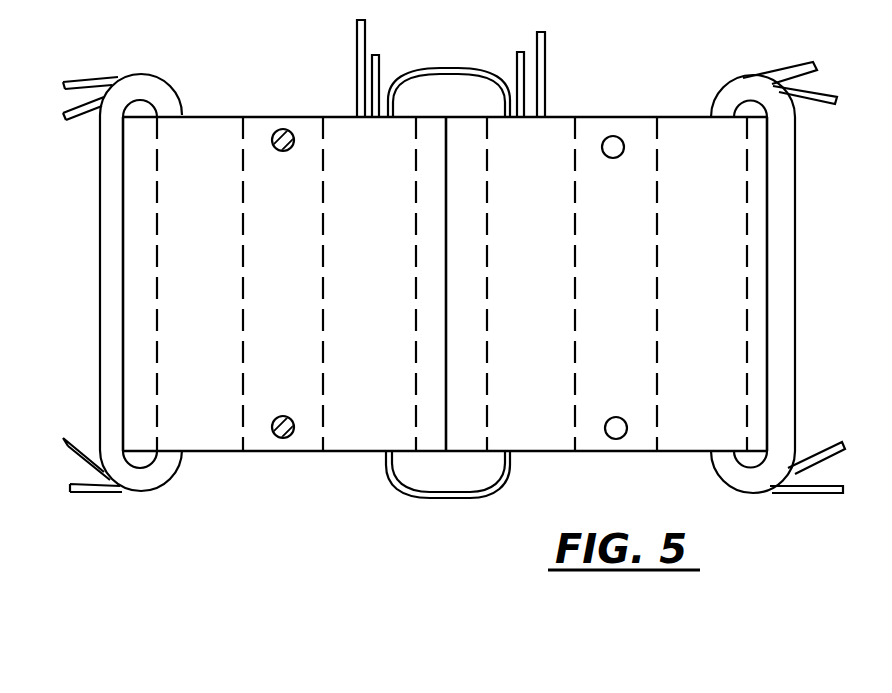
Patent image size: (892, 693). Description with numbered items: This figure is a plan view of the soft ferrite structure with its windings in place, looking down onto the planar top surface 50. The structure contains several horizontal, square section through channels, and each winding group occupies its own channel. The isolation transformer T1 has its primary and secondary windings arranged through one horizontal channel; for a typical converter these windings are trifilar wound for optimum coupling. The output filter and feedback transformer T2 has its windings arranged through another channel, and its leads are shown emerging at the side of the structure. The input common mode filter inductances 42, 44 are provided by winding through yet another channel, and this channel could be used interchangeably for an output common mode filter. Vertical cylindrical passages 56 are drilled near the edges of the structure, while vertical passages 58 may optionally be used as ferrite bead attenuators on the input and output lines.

The input common mode filter inductance 42 is at (76, 117).
The input common mode filter inductance 44 is at (112, 57).
The planar top surface 50 is at (658, 292).
The vertical cylindrical passage 56 is at (612, 136).
The vertical passage 58 is at (283, 128).
The isolation transformer T1 is at (464, 70).
The output filter and feedback transformer T2 is at (738, 85).